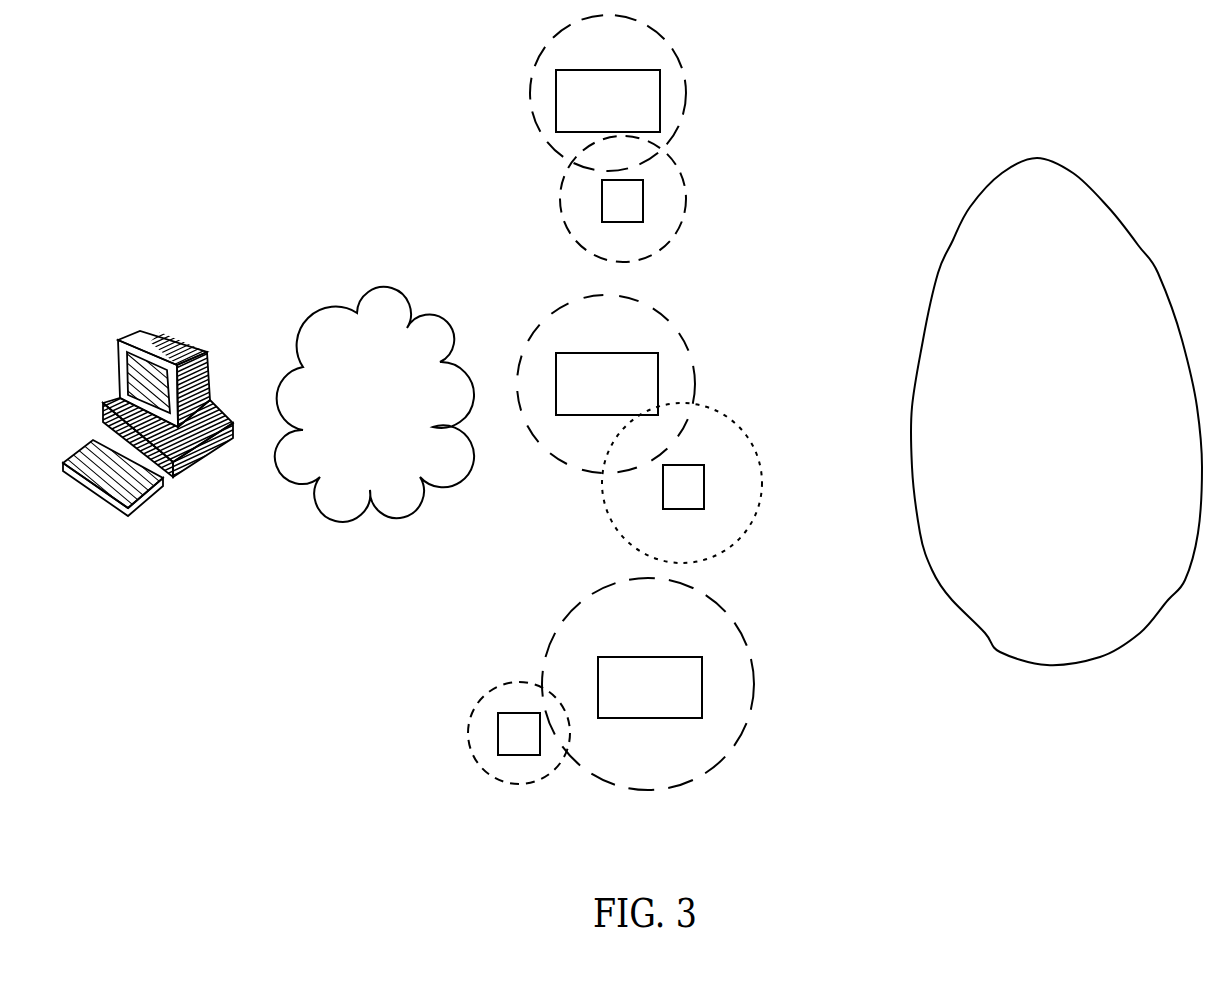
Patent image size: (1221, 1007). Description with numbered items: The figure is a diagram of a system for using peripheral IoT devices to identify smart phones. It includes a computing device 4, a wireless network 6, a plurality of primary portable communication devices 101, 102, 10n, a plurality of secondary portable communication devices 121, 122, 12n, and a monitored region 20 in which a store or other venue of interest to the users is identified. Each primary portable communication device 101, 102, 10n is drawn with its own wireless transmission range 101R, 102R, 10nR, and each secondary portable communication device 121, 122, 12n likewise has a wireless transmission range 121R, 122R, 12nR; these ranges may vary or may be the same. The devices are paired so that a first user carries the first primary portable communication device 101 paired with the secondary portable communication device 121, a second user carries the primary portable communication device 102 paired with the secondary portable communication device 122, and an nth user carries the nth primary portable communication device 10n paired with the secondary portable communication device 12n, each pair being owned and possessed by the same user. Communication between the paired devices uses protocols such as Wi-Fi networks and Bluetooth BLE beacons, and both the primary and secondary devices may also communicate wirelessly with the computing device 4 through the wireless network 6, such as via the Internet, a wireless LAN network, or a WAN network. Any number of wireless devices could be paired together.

The computing device 4 is at (192, 470).
The wireless network 6 is at (371, 442).
The monitored region 20 is at (1065, 432).
The first primary portable communication device 101 is at (647, 105).
The wireless transmission range of first primary portable communication device 101R is at (673, 123).
The first secondary portable communication device 121 is at (638, 198).
The wireless transmission range of first secondary portable communication device 121R is at (570, 200).
The second primary portable communication device 102 is at (650, 373).
The wireless transmission range of second primary portable communication device 102R is at (552, 335).
The second secondary portable communication device 122 is at (697, 487).
The wireless transmission range of second secondary portable communication device 122R is at (620, 508).
The nth primary portable communication device 10n is at (680, 668).
The wireless transmission range of nth primary portable communication device 10nR is at (733, 703).
The nth secondary portable communication device 12n is at (517, 722).
The wireless transmission range of nth secondary portable communication device 12nR is at (491, 733).